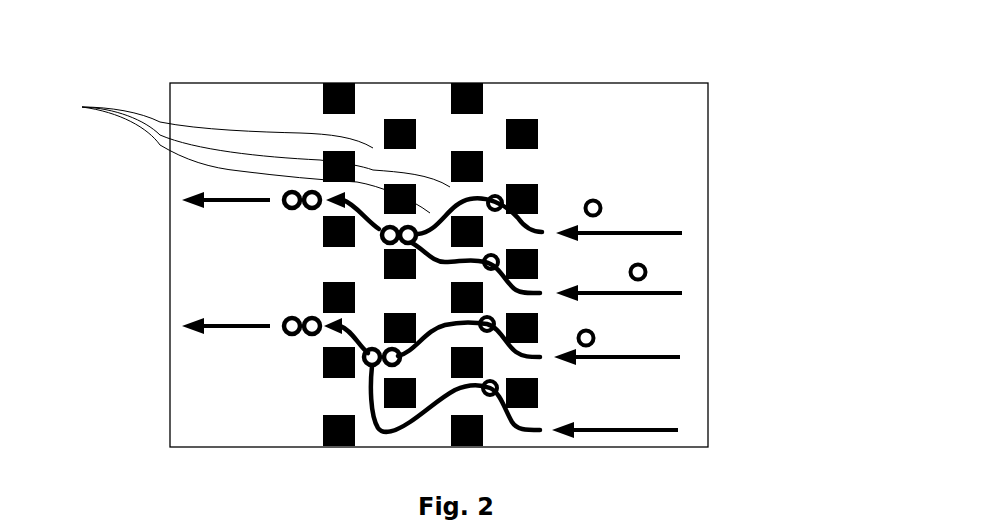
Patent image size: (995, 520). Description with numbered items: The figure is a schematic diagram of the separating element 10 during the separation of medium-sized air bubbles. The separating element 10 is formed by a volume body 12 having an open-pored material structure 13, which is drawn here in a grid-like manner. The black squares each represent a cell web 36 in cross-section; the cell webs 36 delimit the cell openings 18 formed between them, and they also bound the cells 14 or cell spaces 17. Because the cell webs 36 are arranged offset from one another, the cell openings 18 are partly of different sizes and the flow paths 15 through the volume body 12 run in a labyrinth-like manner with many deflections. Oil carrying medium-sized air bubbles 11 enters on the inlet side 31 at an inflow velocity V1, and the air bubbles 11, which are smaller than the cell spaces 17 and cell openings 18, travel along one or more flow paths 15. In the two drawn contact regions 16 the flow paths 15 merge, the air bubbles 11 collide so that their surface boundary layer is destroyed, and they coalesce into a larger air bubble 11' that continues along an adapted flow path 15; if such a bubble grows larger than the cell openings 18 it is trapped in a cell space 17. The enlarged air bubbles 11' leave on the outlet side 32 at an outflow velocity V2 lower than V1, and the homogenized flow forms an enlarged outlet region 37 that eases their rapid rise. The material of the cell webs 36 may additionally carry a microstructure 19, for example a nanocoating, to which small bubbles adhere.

The separating element 10 is at (342, 70).
The air bubbles 11 is at (673, 295).
The larger air bubble 11' is at (227, 278).
The volume body 12 is at (530, 68).
The material structure 13 is at (421, 95).
The cells 14 is at (583, 230).
The flow paths 15 is at (542, 226).
The contact regions 16 is at (385, 222).
The cell spaces 17 is at (463, 127).
The cell openings 18 is at (244, 154).
The microstructure 19 is at (412, 440).
The inlet side 31 is at (668, 159).
The outlet side 32 is at (425, 231).
The cell web 36 is at (447, 378).
The outlet region 37 is at (268, 93).
The inflow velocity V1 is at (709, 296).
The outflow velocity V2 is at (193, 332).